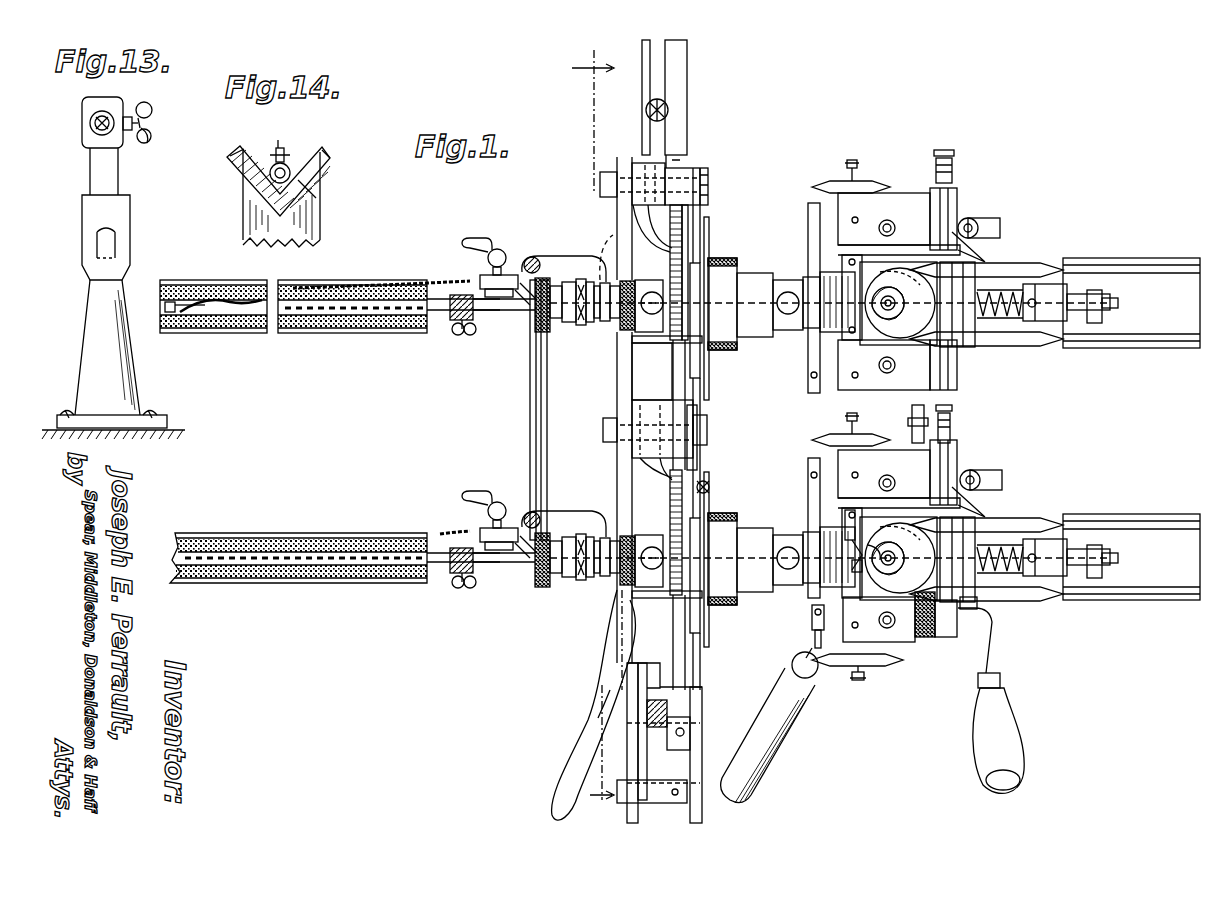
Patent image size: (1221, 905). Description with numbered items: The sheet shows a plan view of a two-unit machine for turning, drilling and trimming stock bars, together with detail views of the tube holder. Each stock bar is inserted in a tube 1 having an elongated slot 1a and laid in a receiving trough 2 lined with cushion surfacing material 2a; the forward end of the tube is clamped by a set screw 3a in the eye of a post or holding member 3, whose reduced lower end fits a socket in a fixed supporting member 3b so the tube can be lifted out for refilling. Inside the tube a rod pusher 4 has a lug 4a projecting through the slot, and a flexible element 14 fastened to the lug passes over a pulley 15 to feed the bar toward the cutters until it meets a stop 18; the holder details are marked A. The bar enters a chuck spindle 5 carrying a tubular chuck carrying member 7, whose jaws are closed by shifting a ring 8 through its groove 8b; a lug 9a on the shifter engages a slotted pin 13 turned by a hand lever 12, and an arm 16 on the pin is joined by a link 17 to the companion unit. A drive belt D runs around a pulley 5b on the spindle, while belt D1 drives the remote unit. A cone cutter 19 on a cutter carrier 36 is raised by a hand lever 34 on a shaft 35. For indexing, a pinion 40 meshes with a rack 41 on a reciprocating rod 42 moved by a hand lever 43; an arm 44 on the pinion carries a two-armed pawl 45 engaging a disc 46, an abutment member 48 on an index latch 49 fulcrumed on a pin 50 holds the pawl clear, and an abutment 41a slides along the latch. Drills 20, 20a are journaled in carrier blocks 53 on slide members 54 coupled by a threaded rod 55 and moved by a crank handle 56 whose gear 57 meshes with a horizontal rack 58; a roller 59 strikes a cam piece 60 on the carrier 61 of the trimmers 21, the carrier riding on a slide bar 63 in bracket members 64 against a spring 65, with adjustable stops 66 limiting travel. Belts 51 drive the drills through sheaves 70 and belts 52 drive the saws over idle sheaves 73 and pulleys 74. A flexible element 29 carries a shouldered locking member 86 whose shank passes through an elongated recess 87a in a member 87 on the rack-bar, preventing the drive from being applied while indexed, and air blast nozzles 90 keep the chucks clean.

In FIG. 13, the tube 1 is at (92, 133).
In FIG. 14, the tube 1 is at (262, 194).
In FIG. 1, the tube 1 is at (332, 320).
In FIG. 13, the elongated slot 1a is at (94, 120).
In FIG. 14, the elongated slot 1a is at (276, 165).
In FIG. 1, the elongated slot 1a is at (390, 320).
In FIG. 14, the receiving trough 2 is at (318, 176).
In FIG. 1, the receiving trough 2 is at (236, 282).
In FIG. 14, the cushion surfacing material 2a is at (245, 160).
In FIG. 1, the cushion surfacing material 2a is at (213, 325).
In FIG. 13, the holding member 3 is at (108, 178).
In FIG. 1, the holding member 3 is at (455, 320).
In FIG. 13, the set screw 3a is at (138, 142).
In FIG. 1, the set screw 3a is at (466, 334).
In FIG. 13, the fixed supporting member 3b is at (118, 383).
In FIG. 1, the rod pusher 4 is at (170, 303).
In FIG. 14, the web or lug 4a is at (300, 172).
In FIG. 1, the web or lug 4a is at (235, 305).
In FIG. 13, the clamp screw A is at (122, 106).
In FIG. 14, the clamp screw A is at (300, 180).
In FIG. 1, the clamp screw A is at (512, 312).
In FIG. 1, the chuck spindle 5 is at (828, 530).
In FIG. 1, the pulley 5b is at (748, 530).
In FIG. 1, the tubular chuck carrying member 7 is at (545, 333).
In FIG. 1, the shiftable ring 8 is at (590, 325).
In FIG. 1, the annular groove 8b is at (580, 325).
In FIG. 1, the lug or projection 9a is at (605, 247).
In FIG. 1, the hand operated shifter lever 12 is at (588, 700).
In FIG. 1, the pin or short shaft 13 is at (583, 282).
In FIG. 14, the flexible element 14 is at (285, 152).
In FIG. 1, the flexible element 14 is at (435, 285).
In FIG. 1, the pulley 15 is at (492, 282).
In FIG. 1, the arm 16 is at (548, 262).
In FIG. 1, the link 17 is at (530, 407).
In FIG. 1, the stop 18 is at (898, 431).
In FIG. 1, the cutting tool 19 is at (852, 548).
In FIG. 1, the drill 20 is at (855, 572).
In FIG. 1, the drill 20a is at (847, 520).
In FIG. 1, the trimmers 21 is at (880, 568).
In FIG. 1, the flexible element 29 is at (668, 116).
In FIG. 1, the hand lever 34 is at (790, 717).
In FIG. 1, the shaft 35 is at (815, 637).
In FIG. 1, the cutter carrier 36 is at (812, 605).
In FIG. 1, the loose gear or pinion 40 is at (672, 280).
In FIG. 1, the slidable rack 41 is at (670, 257).
In FIG. 1, the abutment 41a is at (712, 467).
In FIG. 1, the reciprocating bar or rod 42 is at (676, 382).
In FIG. 1, the hand lever 43 is at (668, 710).
In FIG. 1, the arm 44 is at (690, 337).
In FIG. 1, the two-armed pawl 45 is at (708, 370).
In FIG. 1, the disc 46 is at (702, 352).
In FIG. 1, the abutment member 48 is at (708, 484).
In FIG. 1, the index latch piece 49 is at (700, 449).
In FIG. 1, the pin or bolt 50 is at (708, 422).
In FIG. 1, the belts 51 is at (812, 184).
In FIG. 1, the belts 52 is at (1070, 348).
In FIG. 1, the carrier blocks 53 is at (858, 206).
In FIG. 1, the slide members 54 is at (958, 206).
In FIG. 1, the right and left threaded rod 55 is at (926, 416).
In FIG. 1, the crank handle 56 is at (985, 739).
In FIG. 1, the gear 57 is at (935, 630).
In FIG. 1, the horizontal rack 58 is at (948, 640).
In FIG. 1, the roller 59 is at (1002, 223).
In FIG. 1, the cam piece 60 is at (985, 262).
In FIG. 1, the carrier 61 is at (977, 603).
In FIG. 1, the slide bar 63 is at (1085, 550).
In FIG. 1, the bracket members 64 is at (1045, 540).
In FIG. 1, the spring 65 is at (1008, 546).
In FIG. 1, the adjustable stops 66 is at (952, 165).
In FIG. 1, the sheaves 70 is at (866, 178).
In FIG. 1, the idle pulleys or sheaves 73 is at (1030, 266).
In FIG. 1, the pulleys 74 is at (898, 280).
In FIG. 1, the shouldered locking member 86 is at (668, 106).
In FIG. 1, the member 87 is at (678, 90).
In FIG. 1, the elongated recess 87a is at (656, 78).
In FIG. 1, the air blast nozzles 90 is at (500, 250).
In FIG. 1, the drive belt D is at (716, 514).
In FIG. 1, the belt D1 is at (728, 262).